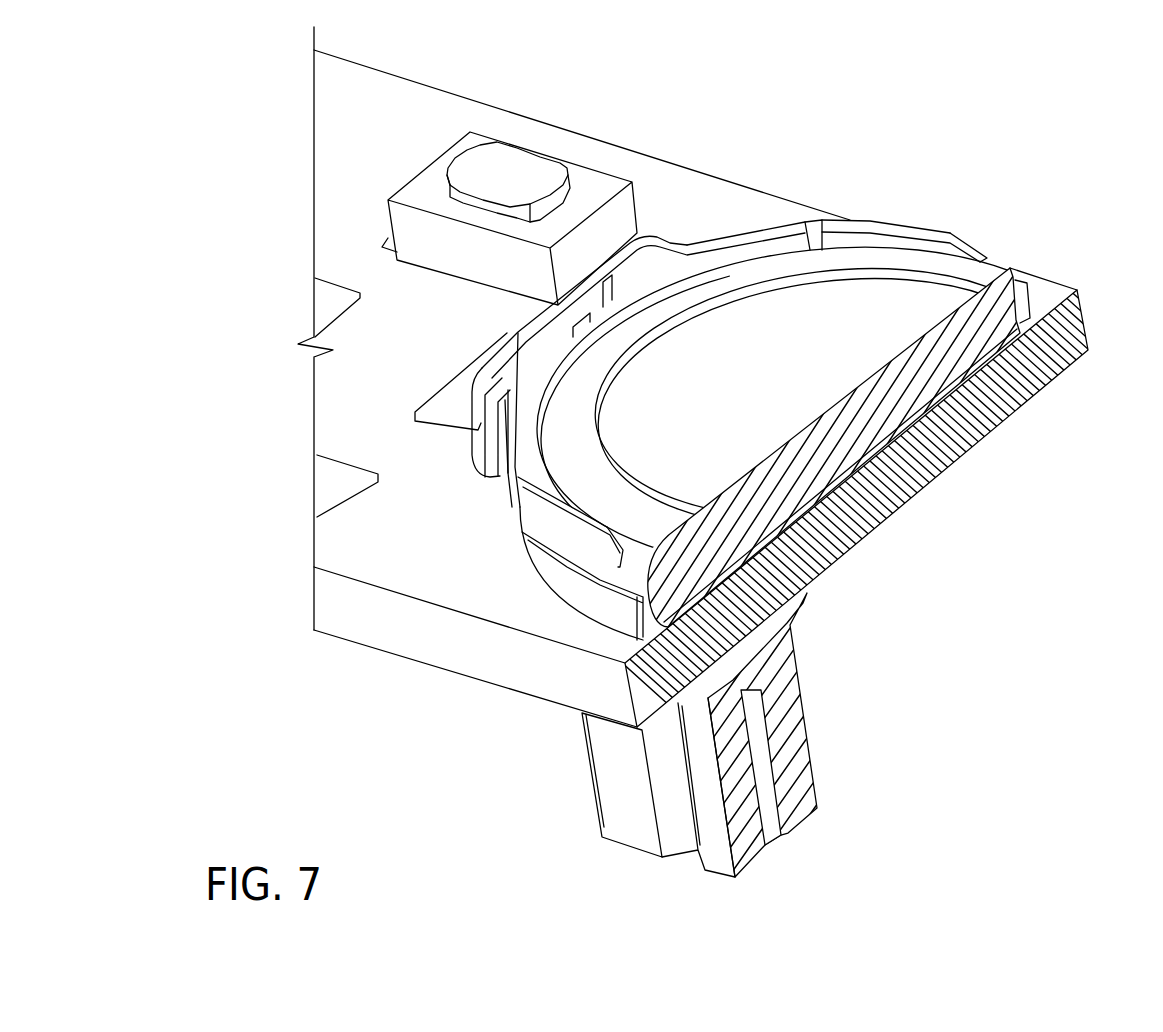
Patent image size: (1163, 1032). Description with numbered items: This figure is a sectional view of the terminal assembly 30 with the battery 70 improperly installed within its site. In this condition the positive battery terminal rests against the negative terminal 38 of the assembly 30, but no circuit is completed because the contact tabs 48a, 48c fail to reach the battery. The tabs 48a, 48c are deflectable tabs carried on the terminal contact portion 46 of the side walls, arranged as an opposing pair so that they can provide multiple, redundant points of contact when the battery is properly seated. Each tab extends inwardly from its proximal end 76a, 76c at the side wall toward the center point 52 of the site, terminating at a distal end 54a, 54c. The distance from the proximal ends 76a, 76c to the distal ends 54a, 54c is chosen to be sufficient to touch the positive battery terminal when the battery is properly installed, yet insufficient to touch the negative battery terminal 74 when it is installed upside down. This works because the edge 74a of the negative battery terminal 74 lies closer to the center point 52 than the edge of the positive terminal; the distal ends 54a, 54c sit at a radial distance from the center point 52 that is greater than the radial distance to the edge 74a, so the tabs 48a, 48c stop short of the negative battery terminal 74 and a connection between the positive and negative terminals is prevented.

The terminal assembly 30 is at (1052, 111).
The negative terminal 38 is at (915, 493).
The terminal contact portion 46 is at (939, 224).
The contact tab 48a is at (852, 225).
The contact tab 48c is at (580, 540).
The center point 52 is at (995, 437).
The distal end 54a is at (977, 263).
The distal end 54c is at (607, 552).
The battery 70 is at (877, 293).
The negative battery terminal 74 is at (767, 302).
The edge of negative battery terminal 74a is at (963, 290).
The proximal end 76a is at (520, 500).
The proximal end 76c is at (813, 220).